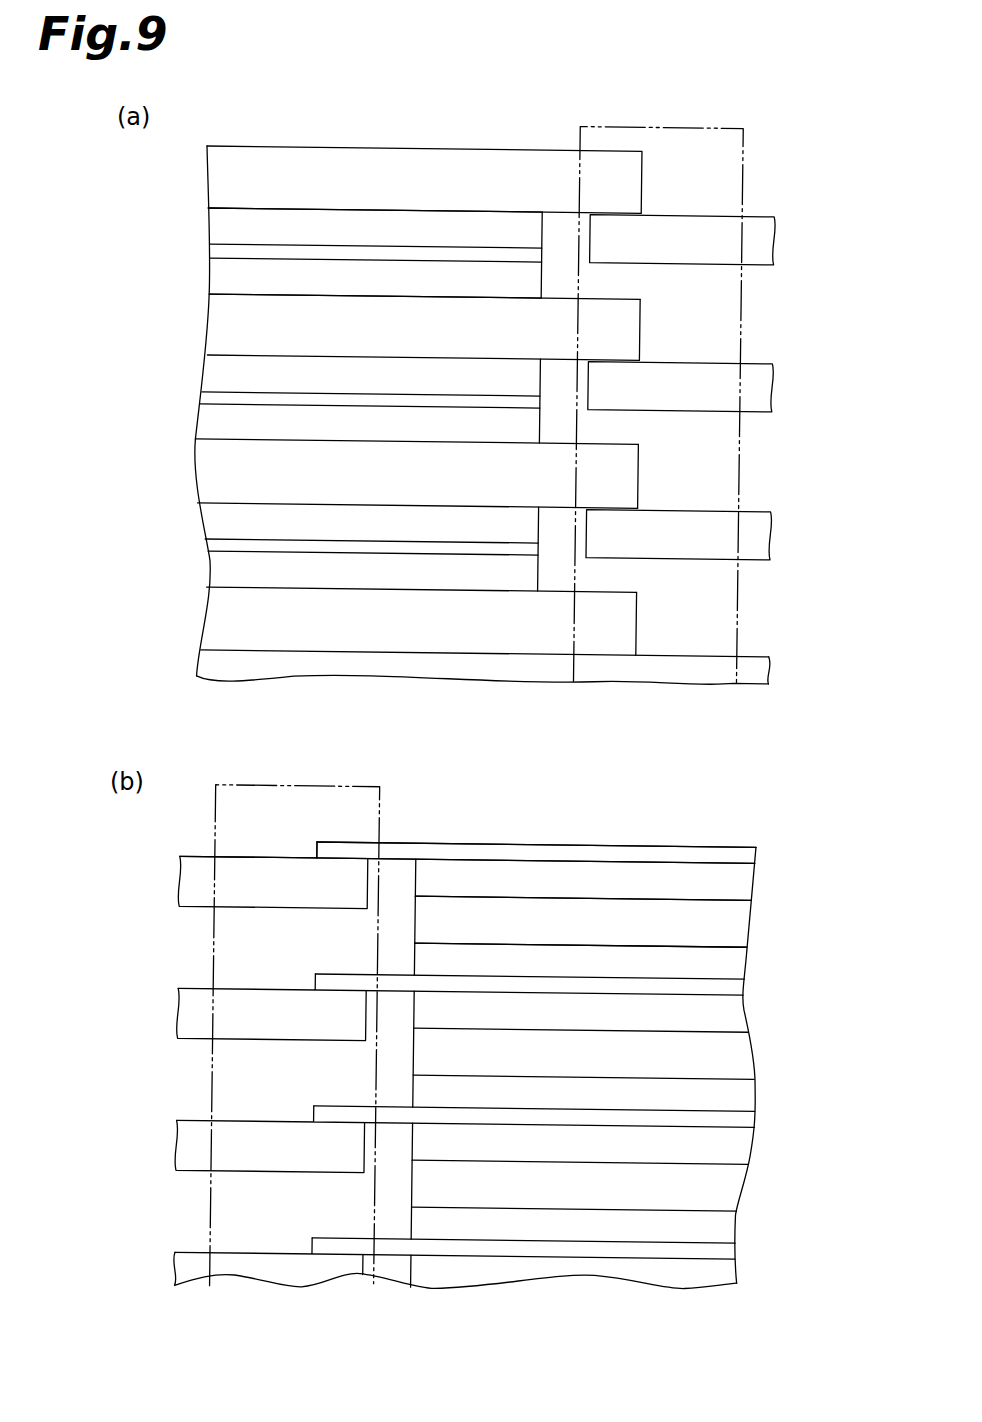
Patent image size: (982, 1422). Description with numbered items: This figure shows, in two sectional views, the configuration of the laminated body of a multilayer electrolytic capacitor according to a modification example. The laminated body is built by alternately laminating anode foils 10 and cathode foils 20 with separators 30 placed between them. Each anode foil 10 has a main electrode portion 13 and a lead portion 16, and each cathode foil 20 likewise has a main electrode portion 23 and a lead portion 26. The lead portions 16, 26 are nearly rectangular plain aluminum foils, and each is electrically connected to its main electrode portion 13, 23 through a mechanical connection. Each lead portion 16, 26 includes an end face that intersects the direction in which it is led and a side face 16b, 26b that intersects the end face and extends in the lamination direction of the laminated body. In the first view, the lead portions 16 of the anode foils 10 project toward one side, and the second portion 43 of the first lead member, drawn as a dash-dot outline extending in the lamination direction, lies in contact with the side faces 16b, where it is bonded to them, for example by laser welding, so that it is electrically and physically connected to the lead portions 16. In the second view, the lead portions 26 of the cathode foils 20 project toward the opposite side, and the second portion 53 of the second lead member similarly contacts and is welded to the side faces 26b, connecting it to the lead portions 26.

The anode foil 10 is at (292, 146).
The main electrode portion 13 is at (350, 172).
The cathode foil 20 is at (293, 250).
The main electrode portion 23 is at (608, 855).
The separator 30 is at (222, 278).
The lead portion 16 is at (753, 267).
The side face 16b is at (727, 240).
The lead portion 26 is at (200, 908).
The side face 26b is at (240, 879).
The second portion 43 is at (740, 479).
The second portion 53 is at (208, 1074).